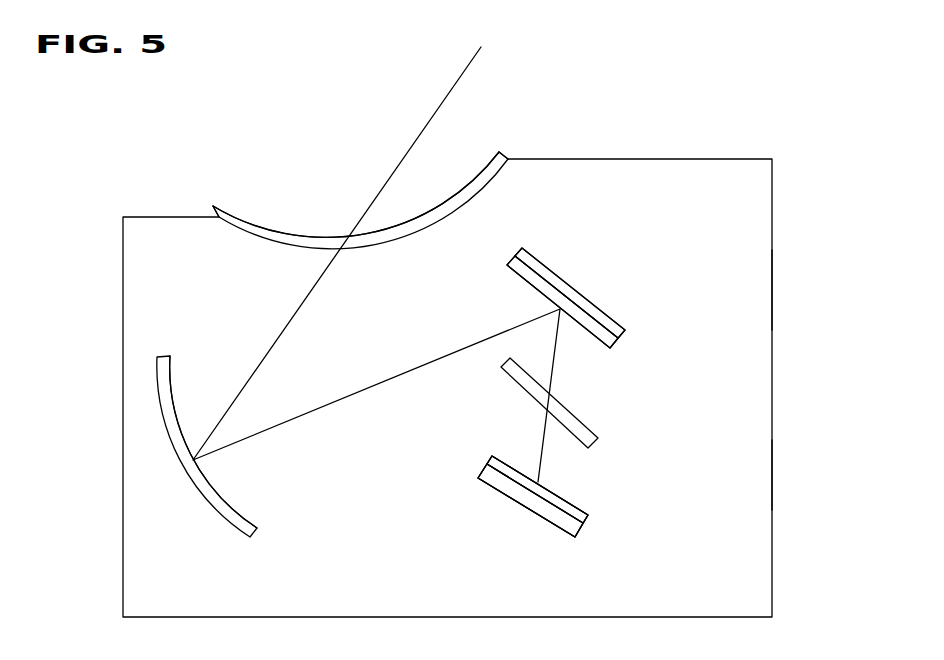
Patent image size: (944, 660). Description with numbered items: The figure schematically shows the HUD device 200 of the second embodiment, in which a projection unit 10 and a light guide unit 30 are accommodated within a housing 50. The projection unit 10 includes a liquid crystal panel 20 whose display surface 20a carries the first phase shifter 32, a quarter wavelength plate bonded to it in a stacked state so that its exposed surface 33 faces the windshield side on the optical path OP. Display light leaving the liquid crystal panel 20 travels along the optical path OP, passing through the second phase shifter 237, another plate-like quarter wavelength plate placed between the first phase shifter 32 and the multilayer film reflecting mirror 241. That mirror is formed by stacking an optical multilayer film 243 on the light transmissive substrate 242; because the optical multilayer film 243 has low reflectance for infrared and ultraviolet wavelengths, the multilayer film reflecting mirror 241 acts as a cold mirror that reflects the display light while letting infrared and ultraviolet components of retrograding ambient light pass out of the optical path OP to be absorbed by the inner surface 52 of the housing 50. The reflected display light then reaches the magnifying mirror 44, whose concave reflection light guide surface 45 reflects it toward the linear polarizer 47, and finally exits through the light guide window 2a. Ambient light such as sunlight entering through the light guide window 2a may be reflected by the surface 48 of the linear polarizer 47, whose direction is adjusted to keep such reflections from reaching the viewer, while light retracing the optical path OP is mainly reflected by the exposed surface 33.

The HUD device 200 is at (730, 117).
The housing 50 is at (773, 290).
The inner surface 52 is at (759, 499).
The light guide unit 30 is at (232, 137).
The surface 48 is at (295, 235).
The light guide window 2a is at (235, 207).
The linear polarizer 47 is at (482, 165).
The magnifying mirror 44 is at (252, 535).
The reflection light guide surface 45 is at (233, 507).
The optical path OP is at (289, 323).
The multilayer film reflecting mirror 241 is at (711, 330).
The light transmissive substrate 242 is at (627, 332).
The optical multilayer film 243 is at (612, 349).
The second phase shifter 237 is at (600, 444).
The exposed surface 33 is at (565, 499).
The first phase shifter 32 is at (590, 521).
The display surface 20a is at (503, 478).
The projection unit 10 is at (578, 538).
The liquid crystal panel 20 is at (533, 496).